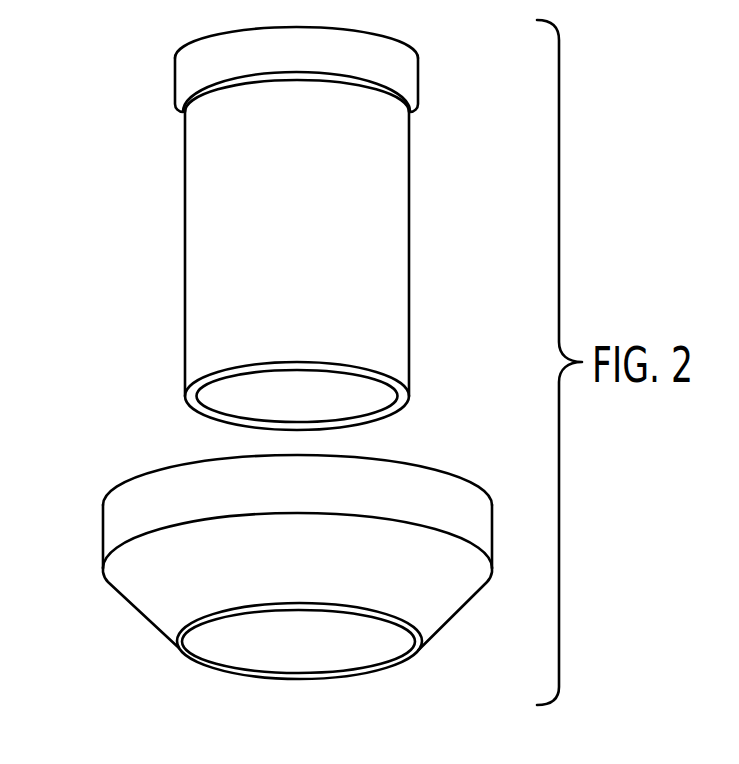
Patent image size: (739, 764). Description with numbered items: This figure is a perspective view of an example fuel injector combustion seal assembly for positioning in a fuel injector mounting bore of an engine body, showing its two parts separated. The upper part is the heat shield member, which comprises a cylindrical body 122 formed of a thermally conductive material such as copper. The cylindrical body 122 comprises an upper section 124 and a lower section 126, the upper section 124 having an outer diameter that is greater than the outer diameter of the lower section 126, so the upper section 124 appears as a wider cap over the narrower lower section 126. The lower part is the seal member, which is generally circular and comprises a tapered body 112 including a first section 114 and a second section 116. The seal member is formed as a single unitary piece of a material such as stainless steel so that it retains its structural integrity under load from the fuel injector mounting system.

The tapered body 112 is at (103, 550).
The first section 114 is at (122, 527).
The second section 116 is at (182, 642).
The cylindrical body 122 is at (185, 203).
The upper section 124 is at (175, 78).
The lower section 126 is at (205, 302).